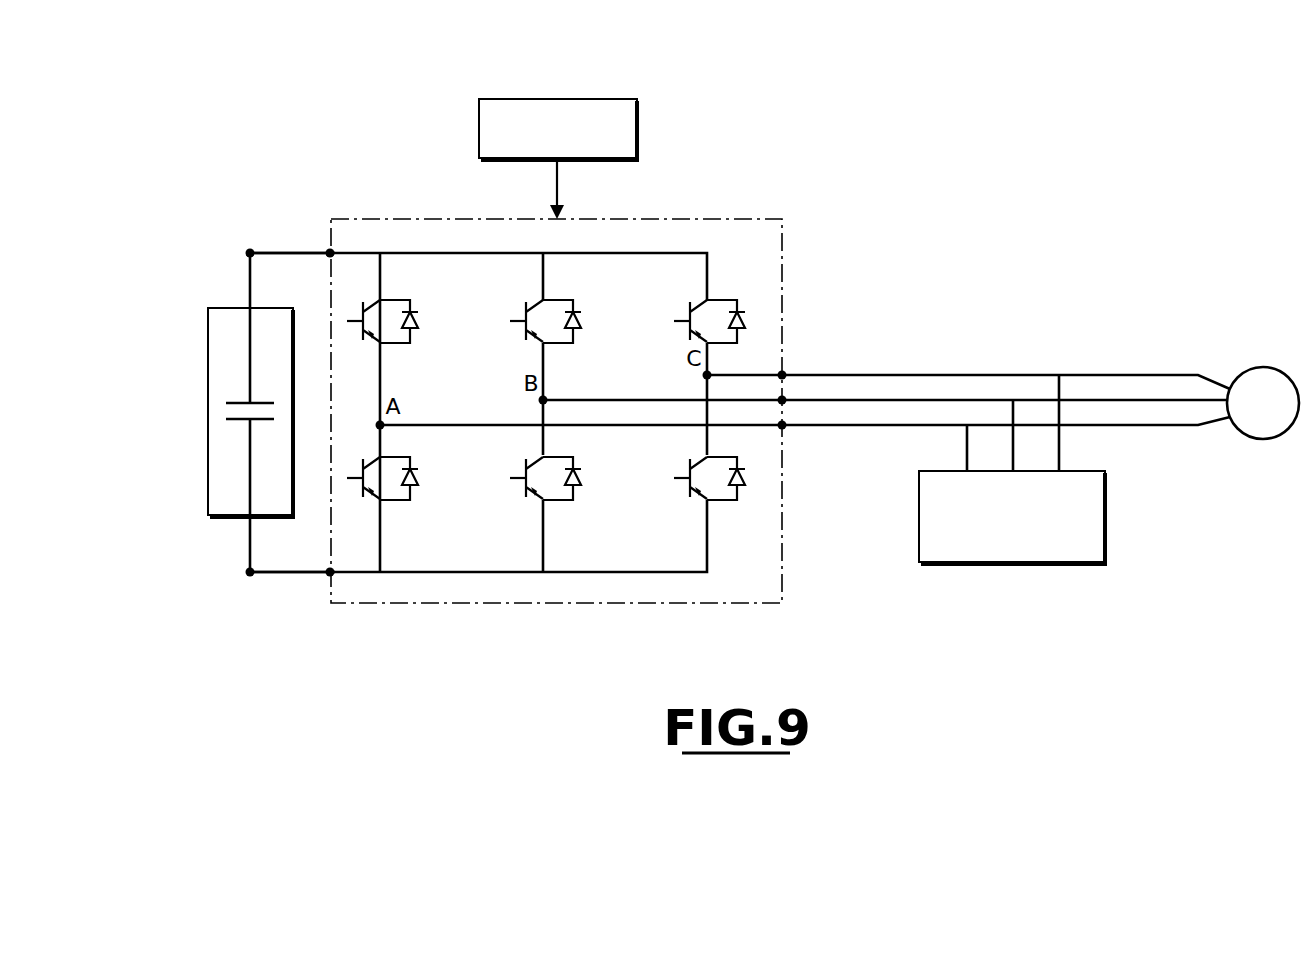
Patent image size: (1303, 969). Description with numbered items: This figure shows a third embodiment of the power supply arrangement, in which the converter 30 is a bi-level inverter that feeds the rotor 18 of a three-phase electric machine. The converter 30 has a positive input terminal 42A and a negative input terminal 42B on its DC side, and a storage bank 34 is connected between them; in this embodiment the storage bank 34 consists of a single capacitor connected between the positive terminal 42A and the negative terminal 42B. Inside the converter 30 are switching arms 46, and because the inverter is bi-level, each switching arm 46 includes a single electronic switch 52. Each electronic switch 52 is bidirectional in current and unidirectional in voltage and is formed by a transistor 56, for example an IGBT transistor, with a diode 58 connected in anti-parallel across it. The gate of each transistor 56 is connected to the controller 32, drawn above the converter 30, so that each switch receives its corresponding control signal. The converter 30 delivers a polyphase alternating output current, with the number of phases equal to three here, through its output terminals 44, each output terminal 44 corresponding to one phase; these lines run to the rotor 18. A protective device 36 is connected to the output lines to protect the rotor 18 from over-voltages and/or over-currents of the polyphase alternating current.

The rotor 18 is at (1265, 367).
The converter 30 is at (735, 218).
The controller 32 is at (607, 97).
The storage bank 34 is at (226, 308).
The protective device 36 is at (1030, 565).
The positive input terminal 42A is at (330, 252).
The negative input terminal 42B is at (330, 574).
The output terminal 44 is at (782, 374).
The switching arm 46 is at (412, 348).
The electronic switch 52 is at (426, 292).
The transistor 56 is at (524, 333).
The diode 58 is at (582, 318).